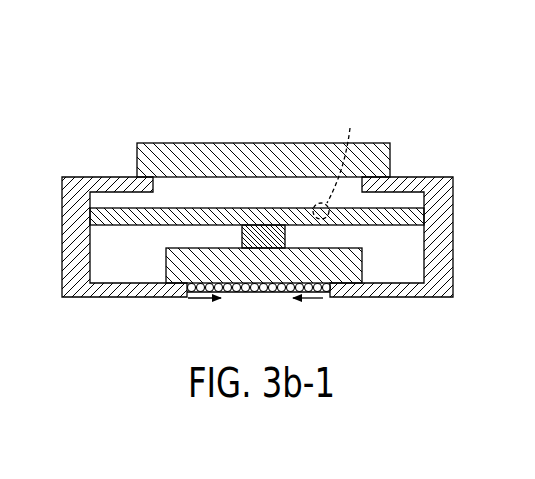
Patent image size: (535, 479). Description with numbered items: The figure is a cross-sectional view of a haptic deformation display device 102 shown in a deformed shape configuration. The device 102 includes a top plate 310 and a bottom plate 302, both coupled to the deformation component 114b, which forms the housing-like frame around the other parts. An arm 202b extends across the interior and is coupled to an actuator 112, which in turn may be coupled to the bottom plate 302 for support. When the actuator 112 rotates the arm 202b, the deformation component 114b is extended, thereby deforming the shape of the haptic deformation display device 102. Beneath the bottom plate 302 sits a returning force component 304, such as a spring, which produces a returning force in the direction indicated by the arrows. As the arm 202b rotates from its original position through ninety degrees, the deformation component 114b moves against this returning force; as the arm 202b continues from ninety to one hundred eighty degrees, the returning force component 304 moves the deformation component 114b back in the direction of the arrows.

The haptic deformation display device 102 is at (76, 99).
The deformation component 114b is at (437, 197).
The top plate 310 is at (390, 161).
The arm 202b is at (95, 219).
The actuator 112 is at (253, 230).
The bottom plate 302 is at (357, 265).
The returning force component 304 is at (258, 292).